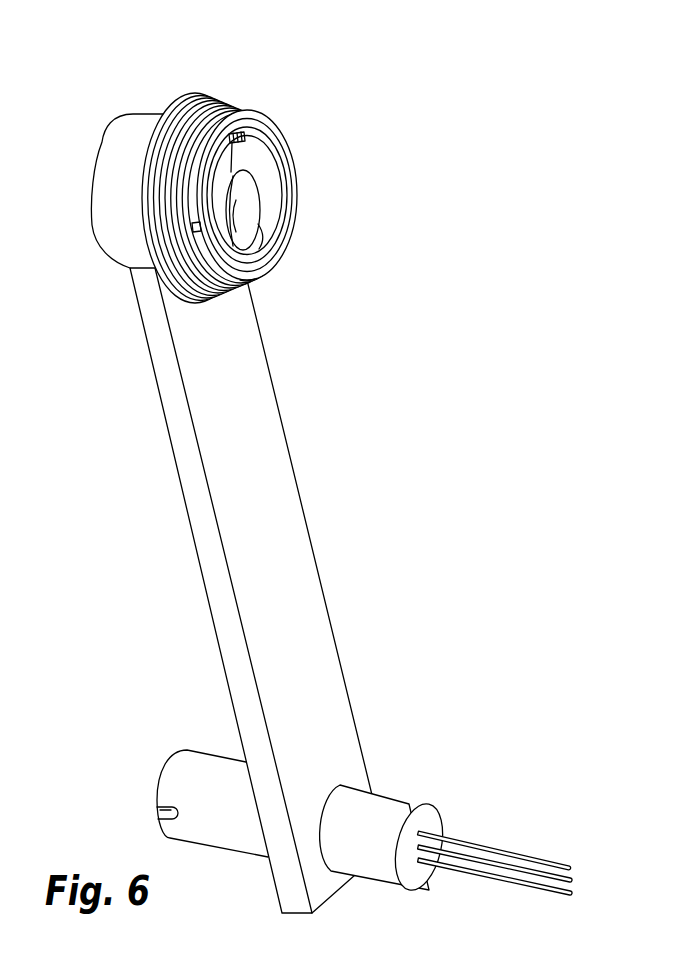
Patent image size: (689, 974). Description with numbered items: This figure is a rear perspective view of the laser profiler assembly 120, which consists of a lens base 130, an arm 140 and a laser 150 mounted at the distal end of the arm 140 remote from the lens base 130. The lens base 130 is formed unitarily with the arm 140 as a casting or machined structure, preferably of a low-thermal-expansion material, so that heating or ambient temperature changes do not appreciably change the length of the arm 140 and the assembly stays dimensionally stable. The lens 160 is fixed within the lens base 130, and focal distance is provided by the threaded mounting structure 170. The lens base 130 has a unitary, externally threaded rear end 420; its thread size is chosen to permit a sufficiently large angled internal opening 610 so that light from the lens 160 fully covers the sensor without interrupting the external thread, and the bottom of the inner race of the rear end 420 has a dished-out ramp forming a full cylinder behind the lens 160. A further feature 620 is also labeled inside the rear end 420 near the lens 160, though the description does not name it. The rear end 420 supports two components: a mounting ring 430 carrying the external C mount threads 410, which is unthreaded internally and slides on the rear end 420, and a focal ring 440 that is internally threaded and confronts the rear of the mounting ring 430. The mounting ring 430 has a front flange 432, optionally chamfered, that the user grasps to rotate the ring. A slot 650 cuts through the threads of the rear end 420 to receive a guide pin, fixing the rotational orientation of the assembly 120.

The laser profiler assembly 120 is at (254, 590).
The lens base 130 is at (100, 242).
The arm 140 is at (300, 549).
The laser 150 is at (388, 802).
The lens 160 is at (240, 218).
The threaded mounting structure 170 is at (258, 289).
The external threads 410 is at (242, 105).
The threaded rear end 420 is at (275, 135).
The mounting ring 430 is at (167, 165).
The front flange 432 is at (202, 105).
The focal ring 440 is at (253, 125).
The internal opening 610 is at (243, 192).
The lens edge 620 is at (262, 238).
The slot 650 is at (237, 145).